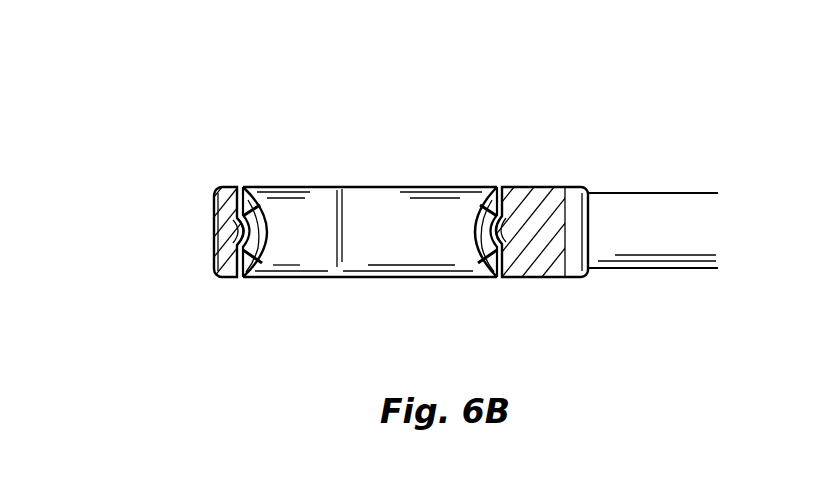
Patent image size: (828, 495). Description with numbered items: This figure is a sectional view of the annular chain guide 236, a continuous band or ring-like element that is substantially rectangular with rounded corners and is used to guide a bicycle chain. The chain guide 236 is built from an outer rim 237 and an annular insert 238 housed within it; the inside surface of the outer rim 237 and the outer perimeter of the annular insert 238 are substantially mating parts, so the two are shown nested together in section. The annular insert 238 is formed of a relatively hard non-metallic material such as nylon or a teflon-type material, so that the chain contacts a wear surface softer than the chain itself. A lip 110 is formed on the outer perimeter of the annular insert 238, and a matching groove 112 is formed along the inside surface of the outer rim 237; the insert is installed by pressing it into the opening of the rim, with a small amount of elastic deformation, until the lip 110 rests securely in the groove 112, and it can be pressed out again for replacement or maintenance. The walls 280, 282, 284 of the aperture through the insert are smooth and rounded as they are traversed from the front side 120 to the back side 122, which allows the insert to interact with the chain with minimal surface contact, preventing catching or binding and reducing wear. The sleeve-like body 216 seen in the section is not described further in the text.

The annular chain guide 236 is at (197, 155).
The outer rim 237 is at (225, 212).
The groove 112 is at (228, 230).
The sleeve 216 is at (305, 250).
The annular insert 238 is at (249, 186).
The lip 110 is at (478, 207).
The wall 280 is at (265, 228).
The wall 282 is at (377, 232).
The wall 284 is at (462, 240).
The back side 122 is at (410, 278).
The front side 120 is at (342, 186).